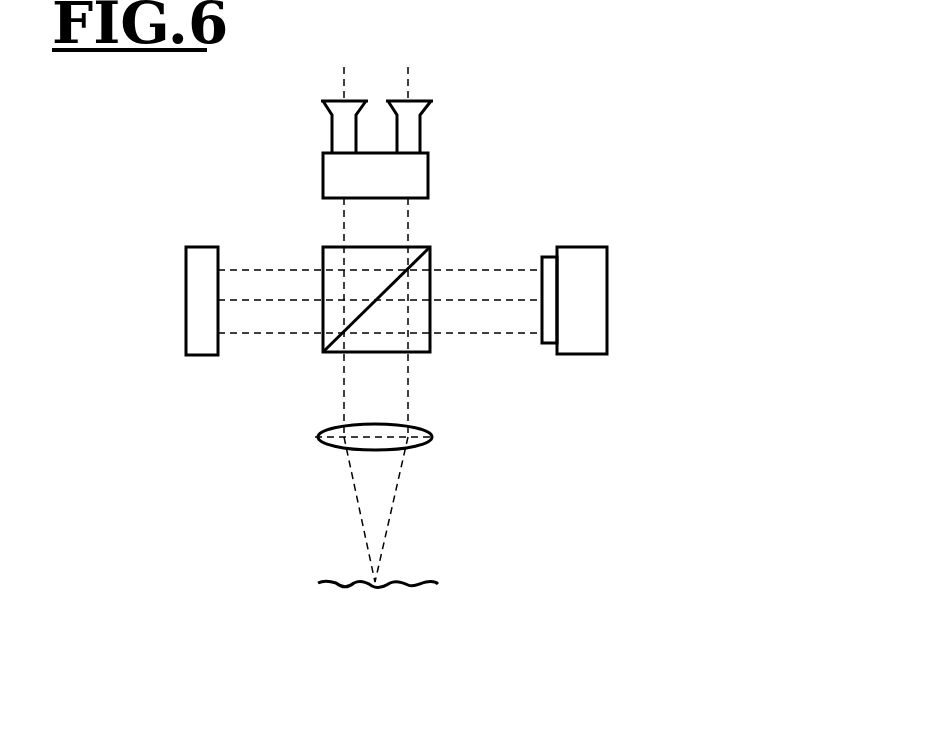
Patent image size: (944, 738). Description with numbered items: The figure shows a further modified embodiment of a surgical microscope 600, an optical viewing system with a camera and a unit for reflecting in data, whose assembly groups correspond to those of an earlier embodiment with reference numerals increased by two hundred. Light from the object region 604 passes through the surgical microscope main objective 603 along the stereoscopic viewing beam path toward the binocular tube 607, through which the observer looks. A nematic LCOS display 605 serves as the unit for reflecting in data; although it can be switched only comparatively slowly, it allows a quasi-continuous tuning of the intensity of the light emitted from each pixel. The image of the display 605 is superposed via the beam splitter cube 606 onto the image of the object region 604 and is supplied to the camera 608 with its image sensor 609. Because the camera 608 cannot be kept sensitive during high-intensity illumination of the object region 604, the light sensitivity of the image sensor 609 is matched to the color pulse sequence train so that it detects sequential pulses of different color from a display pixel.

The surgical microscope 600 is at (562, 143).
The surgical microscope main objective 603 is at (415, 447).
The object region 604 is at (435, 585).
The display 605 is at (192, 261).
The beam splitter cube 606 is at (422, 282).
The binocular tube 607 is at (332, 172).
The camera 608 is at (597, 255).
The image sensor 609 is at (547, 342).